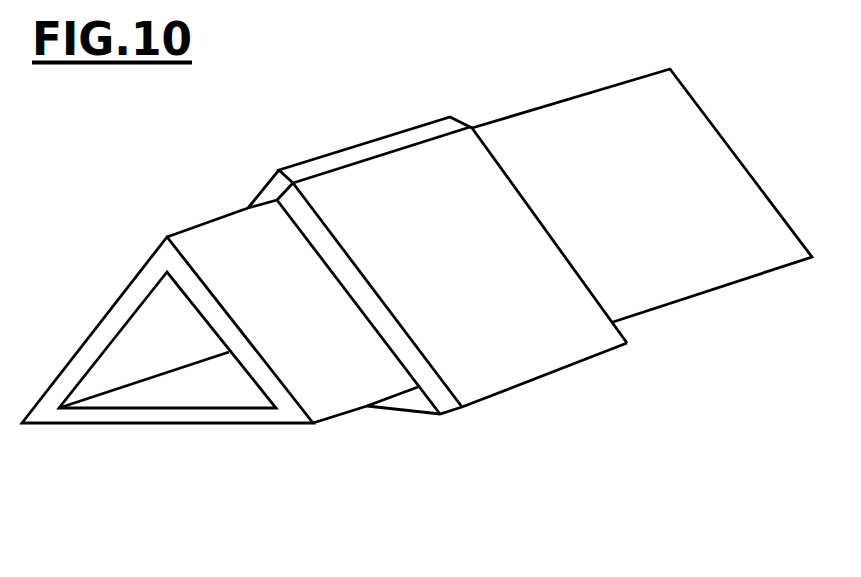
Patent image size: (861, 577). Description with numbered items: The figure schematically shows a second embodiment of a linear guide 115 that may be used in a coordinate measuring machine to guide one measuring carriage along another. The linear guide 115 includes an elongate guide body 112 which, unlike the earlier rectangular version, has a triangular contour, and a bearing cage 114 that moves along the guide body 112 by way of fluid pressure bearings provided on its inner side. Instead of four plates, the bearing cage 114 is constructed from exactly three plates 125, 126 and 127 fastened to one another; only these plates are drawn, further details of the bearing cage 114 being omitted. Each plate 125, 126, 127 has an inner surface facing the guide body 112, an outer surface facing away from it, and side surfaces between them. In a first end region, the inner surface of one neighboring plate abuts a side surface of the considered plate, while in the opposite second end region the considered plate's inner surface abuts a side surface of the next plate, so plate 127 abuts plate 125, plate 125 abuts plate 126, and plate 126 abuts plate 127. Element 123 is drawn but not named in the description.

The guide body 112 is at (198, 354).
The bearing cage 114 is at (438, 258).
The linear guide 115 is at (192, 481).
The plate 123 is at (642, 165).
The plate 125 is at (417, 393).
The plate 126 is at (320, 164).
The plate 127 is at (518, 340).